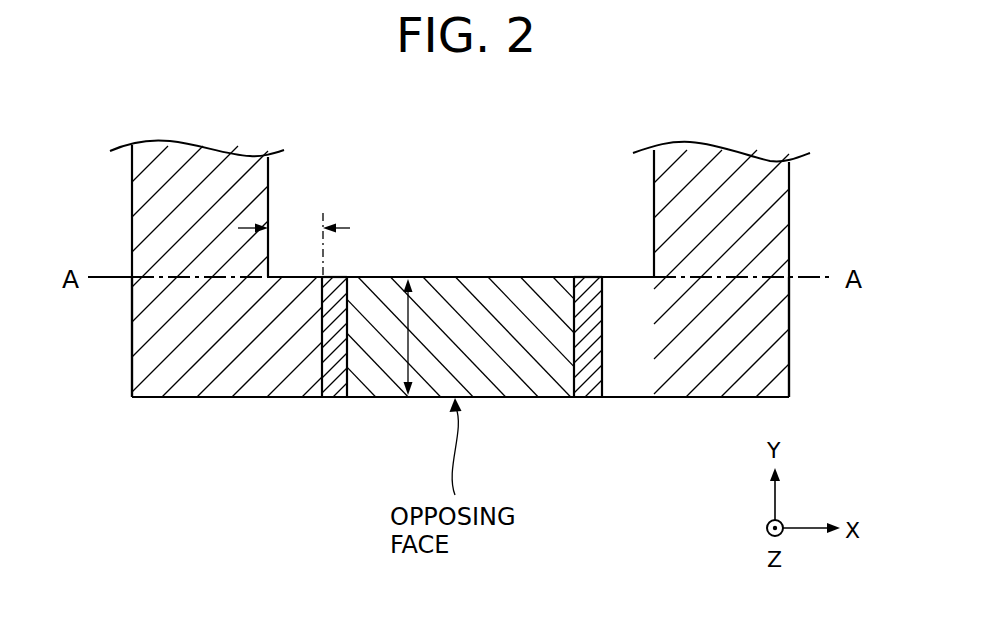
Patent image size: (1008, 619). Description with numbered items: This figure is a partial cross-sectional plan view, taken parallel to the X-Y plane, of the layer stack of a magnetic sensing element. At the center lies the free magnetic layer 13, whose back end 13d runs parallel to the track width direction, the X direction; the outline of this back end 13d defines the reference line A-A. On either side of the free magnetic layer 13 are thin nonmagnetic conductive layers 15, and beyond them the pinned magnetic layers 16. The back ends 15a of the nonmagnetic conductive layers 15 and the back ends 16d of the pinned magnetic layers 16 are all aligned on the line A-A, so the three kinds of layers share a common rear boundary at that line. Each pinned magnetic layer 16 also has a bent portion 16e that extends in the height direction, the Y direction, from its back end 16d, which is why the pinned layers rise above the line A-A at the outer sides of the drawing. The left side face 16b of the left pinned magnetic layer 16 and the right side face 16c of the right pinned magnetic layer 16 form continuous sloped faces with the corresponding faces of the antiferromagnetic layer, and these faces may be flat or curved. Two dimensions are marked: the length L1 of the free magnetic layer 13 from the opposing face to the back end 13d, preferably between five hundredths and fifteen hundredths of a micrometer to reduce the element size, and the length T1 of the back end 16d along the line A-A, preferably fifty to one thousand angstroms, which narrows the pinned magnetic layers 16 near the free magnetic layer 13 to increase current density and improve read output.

The free magnetic layer 13 is at (520, 367).
The back end of the free magnetic layer 13d is at (480, 277).
The nonmagnetic conductive layers 15 is at (338, 382).
The back ends of the nonmagnetic conductive layers 15a is at (335, 277).
The pinned magnetic layers 16 is at (216, 380).
The left side face of the pinned magnetic layer 16b is at (132, 327).
The right side face of the pinned magnetic layer 16c is at (789, 337).
The back ends of the pinned magnetic layers 16d is at (293, 277).
The bent portion 16e is at (270, 166).
The length of the back end of the pinned magnetic layer T1 is at (294, 236).
The length of the free magnetic layer L1 is at (393, 347).